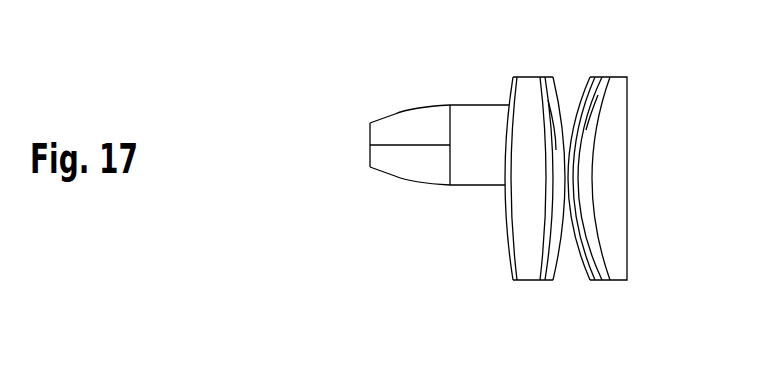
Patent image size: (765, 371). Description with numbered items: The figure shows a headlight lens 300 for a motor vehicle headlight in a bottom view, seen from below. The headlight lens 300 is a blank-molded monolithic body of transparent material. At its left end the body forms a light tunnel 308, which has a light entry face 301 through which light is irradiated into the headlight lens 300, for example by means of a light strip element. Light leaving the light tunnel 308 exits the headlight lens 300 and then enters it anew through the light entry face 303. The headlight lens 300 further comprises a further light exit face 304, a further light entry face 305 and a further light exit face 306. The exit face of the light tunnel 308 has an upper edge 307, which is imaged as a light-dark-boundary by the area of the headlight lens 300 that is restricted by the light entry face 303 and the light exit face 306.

The headlight lens 300 is at (326, 87).
The light entry face 301 is at (368, 152).
The light entry face 303 is at (510, 90).
The further light exit face 304 is at (561, 96).
The further light entry face 305 is at (577, 262).
The further light exit face 306 is at (628, 178).
The upper edge 307 is at (452, 168).
The light tunnel 308 is at (410, 133).